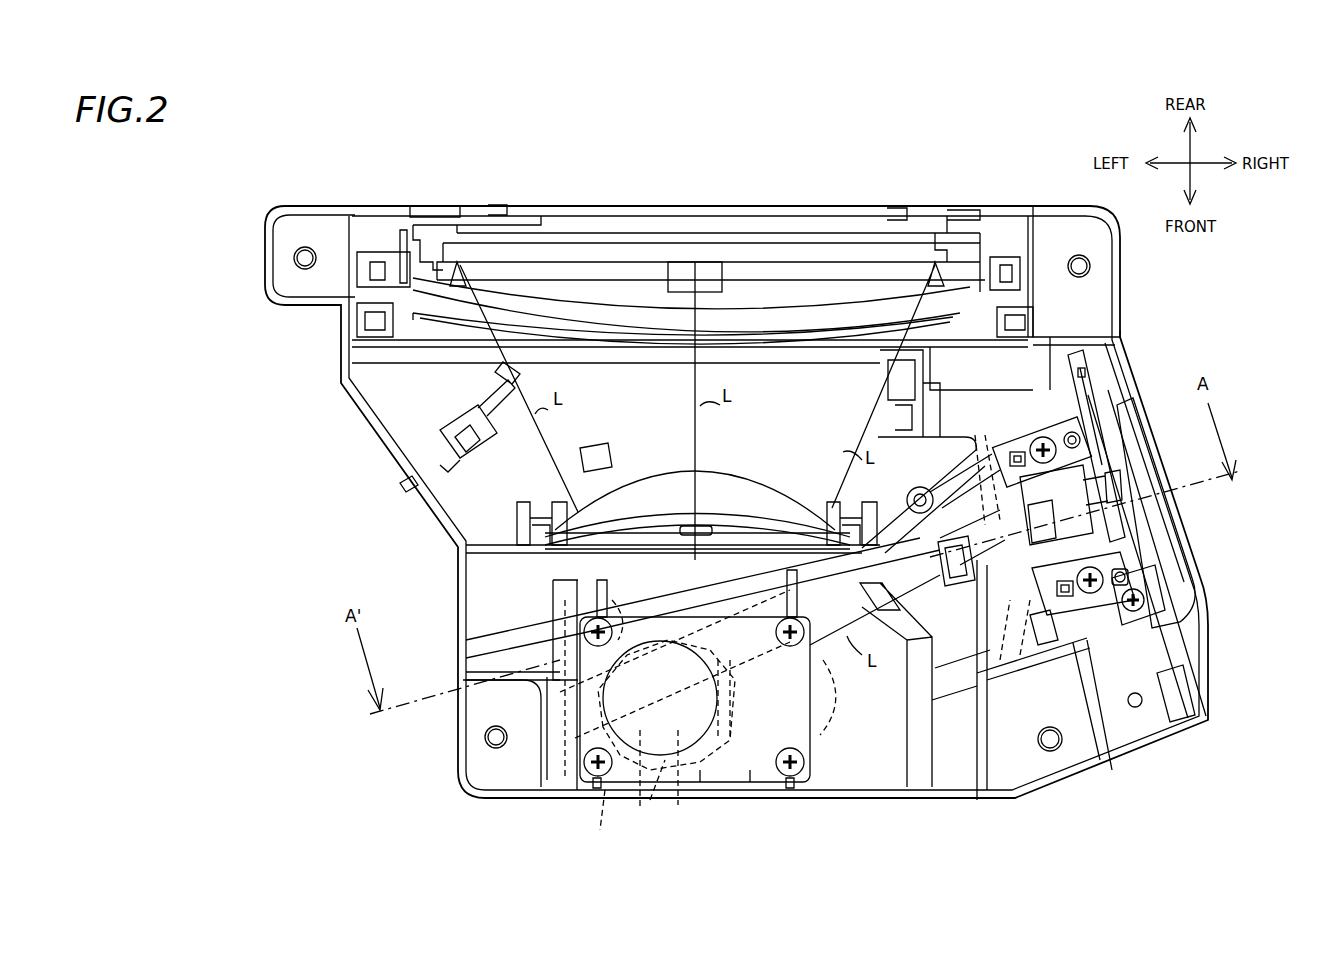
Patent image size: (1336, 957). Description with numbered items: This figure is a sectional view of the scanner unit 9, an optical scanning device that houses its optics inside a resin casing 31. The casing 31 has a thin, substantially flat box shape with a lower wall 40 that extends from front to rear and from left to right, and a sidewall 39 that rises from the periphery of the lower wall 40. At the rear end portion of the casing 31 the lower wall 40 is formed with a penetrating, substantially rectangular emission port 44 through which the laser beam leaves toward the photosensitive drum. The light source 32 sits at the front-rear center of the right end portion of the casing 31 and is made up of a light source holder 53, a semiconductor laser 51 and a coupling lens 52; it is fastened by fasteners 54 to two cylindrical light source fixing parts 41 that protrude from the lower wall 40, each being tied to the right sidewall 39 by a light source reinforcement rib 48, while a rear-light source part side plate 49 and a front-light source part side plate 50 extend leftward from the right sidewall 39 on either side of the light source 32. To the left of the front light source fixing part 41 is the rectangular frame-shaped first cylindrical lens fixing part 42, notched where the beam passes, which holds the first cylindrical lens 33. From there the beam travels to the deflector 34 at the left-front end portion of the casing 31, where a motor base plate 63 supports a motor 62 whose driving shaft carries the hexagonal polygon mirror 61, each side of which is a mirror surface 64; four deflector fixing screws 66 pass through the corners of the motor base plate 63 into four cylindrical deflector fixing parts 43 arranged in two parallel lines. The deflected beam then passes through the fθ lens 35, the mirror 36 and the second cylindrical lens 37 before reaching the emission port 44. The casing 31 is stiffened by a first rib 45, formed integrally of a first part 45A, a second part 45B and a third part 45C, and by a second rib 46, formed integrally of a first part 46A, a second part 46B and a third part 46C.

The scanner unit 9 is at (736, 530).
The casing 31 is at (920, 798).
The light source 32 is at (1075, 398).
The first cylindrical lens 33 is at (950, 585).
The deflector 34 is at (700, 770).
The fθ lens 35 is at (738, 490).
The mirror 36 is at (755, 255).
The second cylindrical lens 37 is at (963, 296).
The sidewall 39 is at (455, 590).
The lower wall 40 is at (957, 778).
The light source fixing part 41 is at (1074, 509).
The first cylindrical lens fixing part 42 is at (923, 488).
The deflector fixing part 43 is at (610, 600).
The emission port 44 is at (972, 306).
The first rib 45 is at (700, 564).
The first part 45A is at (980, 522).
The second part 45B is at (790, 575).
The third part 45C is at (470, 646).
The second rib 46 is at (829, 707).
The first part 46A is at (1017, 670).
The second part 46B is at (692, 709).
The third part 46C is at (521, 763).
The light source reinforcement rib 48 is at (1033, 370).
The rear-light source part side plate 49 is at (1050, 345).
The front-light source part side plate 50 is at (1130, 630).
The semiconductor laser 51 is at (1088, 500).
The coupling lens 52 is at (1023, 550).
The light source holder 53 is at (1040, 628).
The screw 54 is at (1045, 438).
The polygon mirror 61 is at (532, 738).
The motor 62 is at (660, 737).
The motor base plate 63 is at (750, 770).
The mirror surface 64 is at (735, 665).
The deflector fixing screw 66 is at (590, 624).